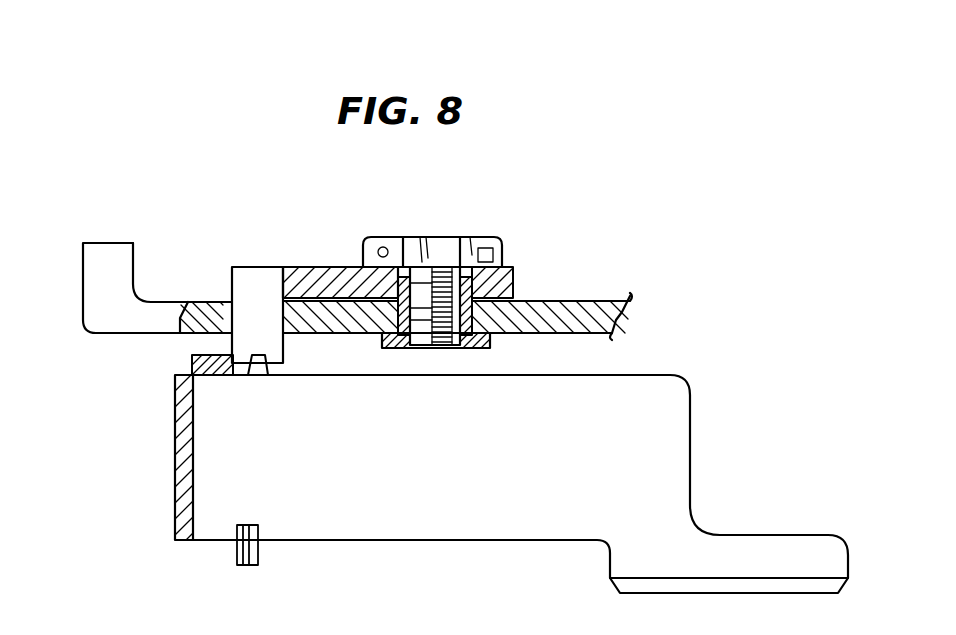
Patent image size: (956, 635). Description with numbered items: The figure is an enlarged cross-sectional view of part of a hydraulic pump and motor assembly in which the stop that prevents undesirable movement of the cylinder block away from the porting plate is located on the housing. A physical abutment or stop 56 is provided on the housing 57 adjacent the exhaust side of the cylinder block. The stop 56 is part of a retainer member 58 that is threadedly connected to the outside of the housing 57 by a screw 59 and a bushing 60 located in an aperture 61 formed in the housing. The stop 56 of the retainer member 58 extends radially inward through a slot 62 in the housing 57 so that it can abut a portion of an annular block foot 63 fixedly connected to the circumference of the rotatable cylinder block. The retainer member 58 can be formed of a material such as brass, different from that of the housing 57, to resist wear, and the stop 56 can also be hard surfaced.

The stop 56 is at (264, 362).
The housing 57 is at (132, 290).
The retainer member 58 is at (342, 266).
The screw 59 is at (431, 237).
The bushing 60 is at (485, 348).
The aperture 61 is at (470, 298).
The slot 62 is at (230, 302).
The annular block foot 63 is at (188, 362).